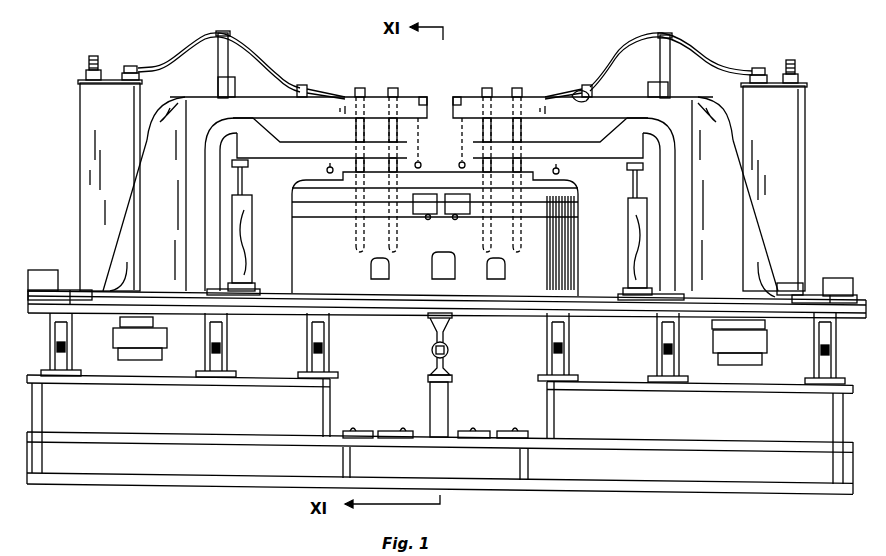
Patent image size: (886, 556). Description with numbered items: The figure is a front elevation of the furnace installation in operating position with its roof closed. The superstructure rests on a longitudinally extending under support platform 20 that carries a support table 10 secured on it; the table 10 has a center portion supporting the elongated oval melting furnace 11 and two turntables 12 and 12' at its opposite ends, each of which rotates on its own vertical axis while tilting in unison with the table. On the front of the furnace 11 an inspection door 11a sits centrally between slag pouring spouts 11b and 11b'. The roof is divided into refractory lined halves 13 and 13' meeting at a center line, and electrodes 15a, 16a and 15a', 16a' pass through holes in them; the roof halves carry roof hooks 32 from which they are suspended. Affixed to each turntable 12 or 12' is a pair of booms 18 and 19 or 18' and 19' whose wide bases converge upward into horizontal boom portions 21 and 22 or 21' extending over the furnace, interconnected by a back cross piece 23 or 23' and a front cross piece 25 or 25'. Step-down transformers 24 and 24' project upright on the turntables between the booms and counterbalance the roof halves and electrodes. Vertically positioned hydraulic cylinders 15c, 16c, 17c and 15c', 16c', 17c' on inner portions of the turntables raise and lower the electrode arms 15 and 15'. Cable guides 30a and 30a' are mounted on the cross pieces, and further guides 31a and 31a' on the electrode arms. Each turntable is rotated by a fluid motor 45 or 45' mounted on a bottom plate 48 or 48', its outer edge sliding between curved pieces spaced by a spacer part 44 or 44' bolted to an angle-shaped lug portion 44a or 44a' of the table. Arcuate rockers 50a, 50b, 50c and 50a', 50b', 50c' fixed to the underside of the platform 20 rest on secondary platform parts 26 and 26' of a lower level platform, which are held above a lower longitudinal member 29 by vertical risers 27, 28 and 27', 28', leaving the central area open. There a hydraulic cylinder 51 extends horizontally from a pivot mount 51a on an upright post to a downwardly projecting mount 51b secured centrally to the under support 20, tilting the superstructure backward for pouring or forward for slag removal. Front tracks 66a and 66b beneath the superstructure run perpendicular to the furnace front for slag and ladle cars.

The support table 10 is at (305, 305).
The under support platform 20 is at (515, 310).
The melting furnace 11 is at (322, 245).
The inspection door 11a is at (448, 254).
The slag pouring spout 11b is at (527, 268).
The slag pouring spout 11b' is at (349, 268).
The turntable 12 is at (794, 275).
The turntable 12' is at (90, 265).
The roof half 13 is at (626, 204).
The roof half 13' is at (252, 204).
The electrode arm 15 is at (583, 127).
The electrode arm 15' is at (298, 127).
The electrode 15a is at (476, 151).
The electrode 15a' is at (380, 156).
The electrode 16a is at (514, 147).
The electrode 16a' is at (342, 147).
The hydraulic cylinder 15c is at (638, 282).
The hydraulic cylinder 15c' is at (246, 277).
The hydraulic cylinder 16c is at (616, 247).
The hydraulic cylinder 16c' is at (262, 242).
The hydraulic cylinder 17c is at (619, 243).
The hydraulic cylinder 17c' is at (258, 239).
The support boom 18 is at (763, 195).
The support boom 18' is at (117, 195).
The support boom 19 is at (718, 109).
The support boom 19' is at (166, 109).
The boom portion 21 is at (557, 81).
The boom portion 21' is at (318, 81).
The boom portion 22 is at (580, 90).
The back cross piece 23 is at (675, 83).
The back cross piece 23' is at (209, 81).
The step-down electric transformer 24 is at (774, 175).
The step-down electric transformer 24' is at (110, 173).
The front cross piece 25 is at (451, 89).
The front cross piece 25' is at (420, 84).
The secondary platform part 26 is at (700, 399).
The secondary platform part 26' is at (178, 393).
The vertical transverse riser 27 is at (821, 438).
The vertical transverse riser 27' is at (59, 428).
The vertical transverse riser 28 is at (541, 410).
The vertical transverse riser 28' is at (349, 408).
The lower longitudinal member 29 is at (180, 444).
The cable guide 30a is at (671, 56).
The cable guide 30a' is at (219, 56).
The cable guide 31a is at (602, 69).
The cable guide 31a' is at (287, 71).
The roof hook 32 is at (460, 163).
The spacer part 44 is at (825, 323).
The spacer part 44' is at (63, 314).
The lug portion 44a is at (841, 267).
The lug portion 44a' is at (45, 242).
The fluid motor 45 is at (723, 347).
The fluid motor 45' is at (121, 346).
The bottom plate 48 is at (740, 329).
The bottom plate 48' is at (155, 327).
The arcuate rocker 50a is at (543, 347).
The arcuate rocker 50a' is at (335, 345).
The arcuate rocker 50b is at (648, 347).
The arcuate rocker 50b' is at (234, 345).
The arcuate rocker 50c is at (807, 348).
The arcuate rocker 50c' is at (67, 360).
The hydraulic cylinder 51 is at (450, 351).
The pivot mount 51a is at (430, 376).
The downwardly-projecting mount 51b is at (435, 320).
The front track 66a is at (352, 429).
The front track 66b is at (520, 429).